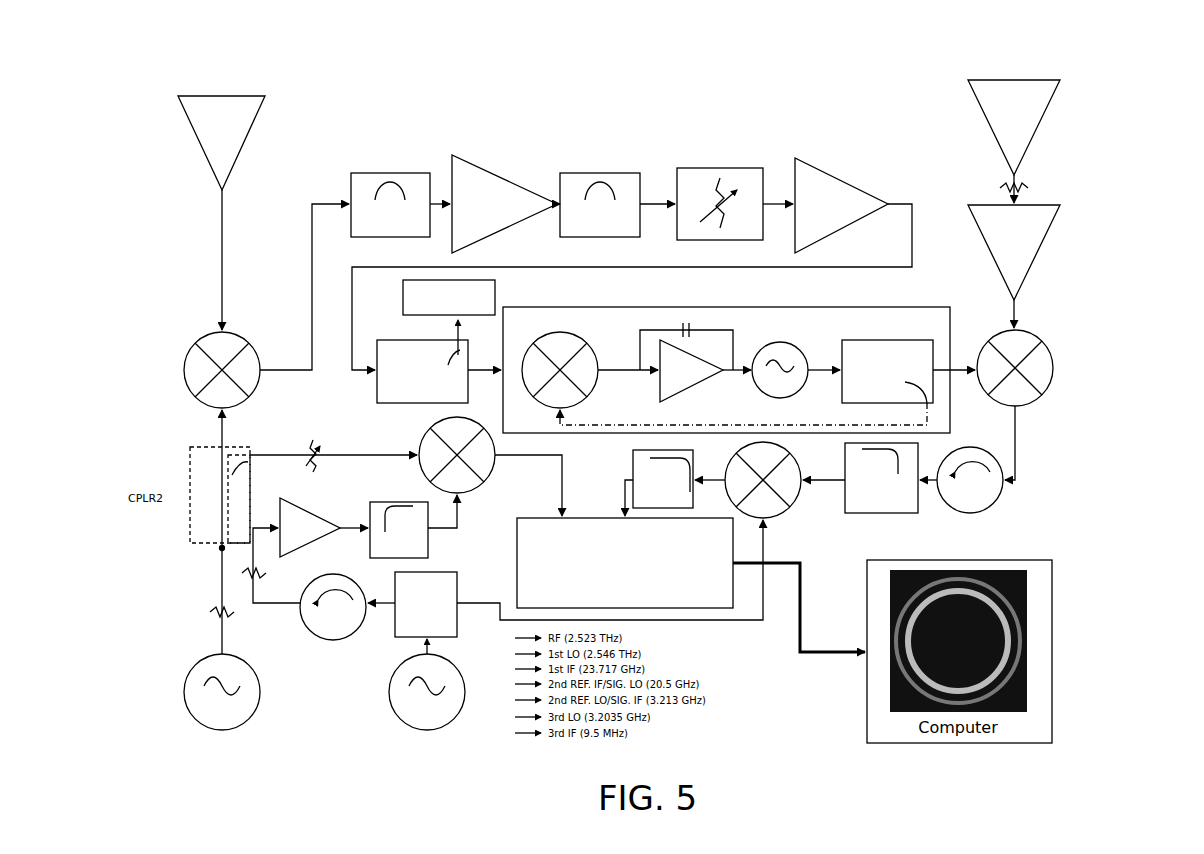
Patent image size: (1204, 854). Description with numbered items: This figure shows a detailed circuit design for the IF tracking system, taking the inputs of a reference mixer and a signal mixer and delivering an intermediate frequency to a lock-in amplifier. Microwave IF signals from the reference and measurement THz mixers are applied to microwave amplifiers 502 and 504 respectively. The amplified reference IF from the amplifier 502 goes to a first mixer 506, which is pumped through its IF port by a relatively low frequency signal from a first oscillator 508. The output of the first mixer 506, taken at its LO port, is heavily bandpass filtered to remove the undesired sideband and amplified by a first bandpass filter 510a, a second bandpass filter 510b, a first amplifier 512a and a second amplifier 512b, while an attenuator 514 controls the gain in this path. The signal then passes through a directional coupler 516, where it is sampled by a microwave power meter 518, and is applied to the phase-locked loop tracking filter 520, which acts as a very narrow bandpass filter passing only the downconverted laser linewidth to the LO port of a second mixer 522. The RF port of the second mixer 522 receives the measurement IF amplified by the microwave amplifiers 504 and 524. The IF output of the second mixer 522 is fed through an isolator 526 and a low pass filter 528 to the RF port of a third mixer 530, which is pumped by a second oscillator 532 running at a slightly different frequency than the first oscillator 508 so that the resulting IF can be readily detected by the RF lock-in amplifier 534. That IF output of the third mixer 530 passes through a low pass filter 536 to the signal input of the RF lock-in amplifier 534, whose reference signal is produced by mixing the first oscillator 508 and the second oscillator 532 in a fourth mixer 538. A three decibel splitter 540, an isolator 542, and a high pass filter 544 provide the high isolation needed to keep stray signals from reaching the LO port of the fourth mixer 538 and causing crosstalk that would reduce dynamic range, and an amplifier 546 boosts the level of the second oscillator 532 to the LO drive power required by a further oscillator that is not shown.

The microwave amplifier 502 is at (182, 102).
The microwave amplifier 504 is at (1043, 83).
The first mixer 506 is at (196, 369).
The first oscillator 508 is at (187, 703).
The bandpass filter FL1 510a is at (388, 172).
The bandpass filter FL2 510b is at (593, 172).
The amplifier A3 512a is at (488, 187).
The amplifier A4 512b is at (808, 163).
The attenuator 514 is at (690, 167).
The directional coupler 516 is at (377, 352).
The microwave power meter 518 is at (450, 279).
The phase-locked loop tracking filter 520 is at (925, 300).
The second mixer 522 is at (1022, 348).
The microwave amplifier 524 is at (1043, 227).
The isolator 526 is at (1004, 478).
The low pass filter 528 is at (912, 513).
The third mixer 530 is at (775, 516).
The second oscillator 532 is at (400, 720).
The RF lock-in amplifier 534 is at (723, 604).
The low pass filter 536 is at (655, 508).
The fourth mixer 538 is at (402, 471).
The 3 dB splitter 540 is at (399, 640).
The isolator 542 is at (305, 623).
The high pass filter 544 is at (367, 551).
The amplifier 546 is at (272, 551).